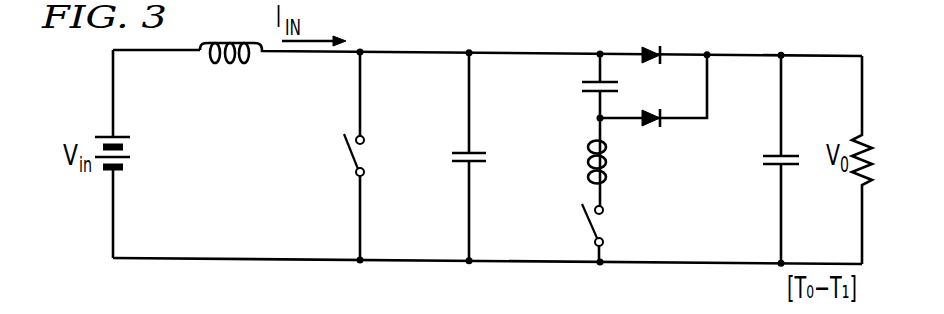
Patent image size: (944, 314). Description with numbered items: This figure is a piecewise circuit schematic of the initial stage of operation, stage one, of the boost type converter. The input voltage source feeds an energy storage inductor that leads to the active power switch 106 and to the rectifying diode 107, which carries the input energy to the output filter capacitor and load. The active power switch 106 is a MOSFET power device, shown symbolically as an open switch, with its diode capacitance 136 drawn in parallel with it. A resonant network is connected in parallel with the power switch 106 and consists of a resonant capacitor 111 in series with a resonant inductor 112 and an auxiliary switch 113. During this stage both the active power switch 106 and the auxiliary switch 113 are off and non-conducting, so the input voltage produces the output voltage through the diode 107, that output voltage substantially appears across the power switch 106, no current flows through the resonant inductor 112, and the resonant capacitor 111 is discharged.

The active power switch 106 is at (334, 156).
The rectifying diode 107 is at (653, 38).
The resonant capacitor 111 is at (583, 86).
The resonant inductor 112 is at (617, 162).
The auxiliary switch 113 is at (612, 233).
The diode capacitance 136 is at (450, 157).